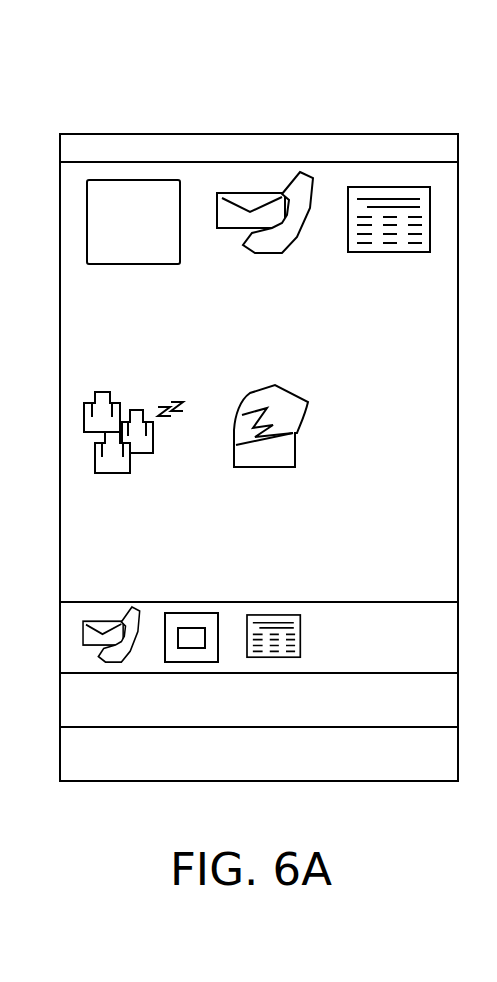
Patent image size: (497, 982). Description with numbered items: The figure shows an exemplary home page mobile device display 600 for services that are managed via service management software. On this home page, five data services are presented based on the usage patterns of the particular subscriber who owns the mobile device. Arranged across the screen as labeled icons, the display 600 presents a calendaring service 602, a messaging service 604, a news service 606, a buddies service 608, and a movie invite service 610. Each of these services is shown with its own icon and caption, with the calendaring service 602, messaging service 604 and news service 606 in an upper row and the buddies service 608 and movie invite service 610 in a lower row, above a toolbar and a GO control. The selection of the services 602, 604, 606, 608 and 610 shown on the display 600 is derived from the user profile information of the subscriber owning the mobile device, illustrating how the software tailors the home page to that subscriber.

The home page mobile device display 600 is at (162, 60).
The calendaring service 602 is at (132, 310).
The messaging service 604 is at (255, 310).
The news service 606 is at (375, 312).
The buddies service 608 is at (107, 530).
The movie invite service 610 is at (250, 530).